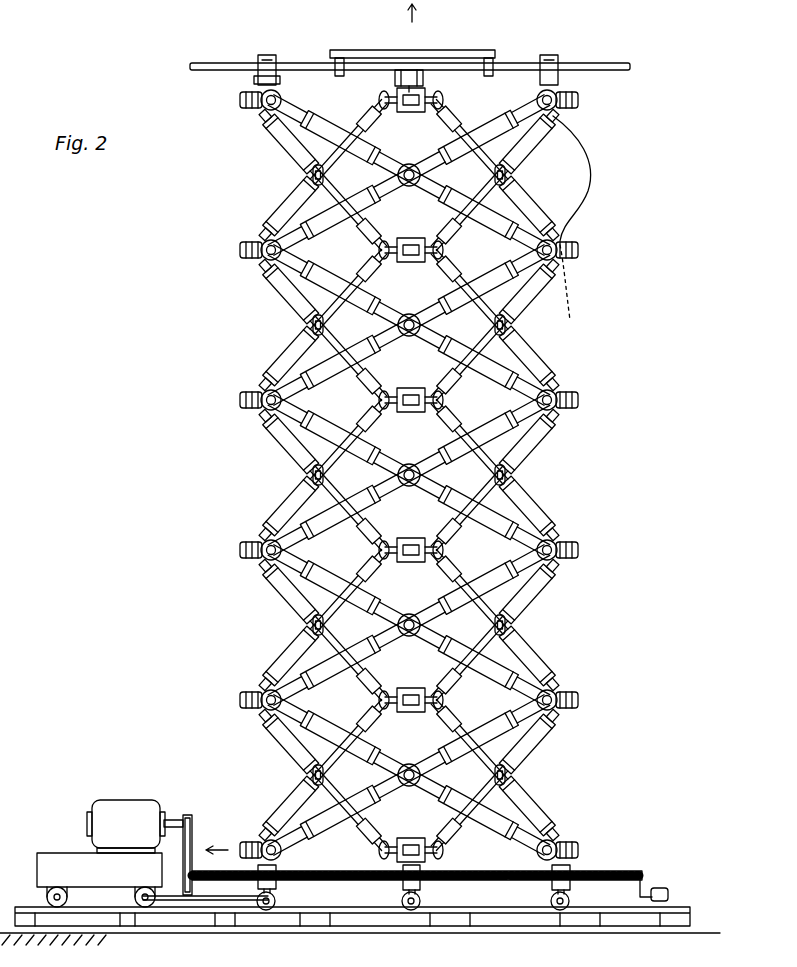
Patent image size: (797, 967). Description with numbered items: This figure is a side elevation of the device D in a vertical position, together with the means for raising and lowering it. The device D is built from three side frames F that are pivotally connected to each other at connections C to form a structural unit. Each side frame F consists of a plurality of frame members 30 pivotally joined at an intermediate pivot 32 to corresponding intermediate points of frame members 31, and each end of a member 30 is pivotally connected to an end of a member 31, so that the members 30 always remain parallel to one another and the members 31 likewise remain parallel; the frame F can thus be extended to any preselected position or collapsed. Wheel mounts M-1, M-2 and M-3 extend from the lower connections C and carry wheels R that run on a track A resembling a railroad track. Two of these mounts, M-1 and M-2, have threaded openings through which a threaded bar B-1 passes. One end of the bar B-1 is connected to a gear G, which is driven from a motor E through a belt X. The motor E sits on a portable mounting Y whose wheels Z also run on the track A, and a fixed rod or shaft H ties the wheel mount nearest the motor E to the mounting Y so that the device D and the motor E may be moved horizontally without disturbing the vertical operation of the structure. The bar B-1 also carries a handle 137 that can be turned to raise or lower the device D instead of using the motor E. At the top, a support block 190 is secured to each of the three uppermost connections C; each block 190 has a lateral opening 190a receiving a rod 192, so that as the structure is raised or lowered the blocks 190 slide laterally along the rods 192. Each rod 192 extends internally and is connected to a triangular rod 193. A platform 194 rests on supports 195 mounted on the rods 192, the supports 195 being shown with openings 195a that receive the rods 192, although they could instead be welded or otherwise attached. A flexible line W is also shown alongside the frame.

The rod 192 is at (240, 66).
The support block 190 is at (273, 56).
The opening 190a is at (252, 75).
The platform 194 is at (450, 50).
The support 195 is at (332, 74).
The opening 195a is at (490, 60).
The triangular rod 193 is at (456, 84).
The connection C is at (252, 108).
The flexible line W is at (578, 140).
The side frame F is at (543, 189).
The frame member 30 is at (374, 284).
The frame member 31 is at (451, 301).
The central pivot 32 is at (409, 316).
The device D is at (596, 402).
The motor E is at (132, 834).
The movable mounting Y is at (106, 882).
The belt X is at (202, 816).
The gear G is at (208, 850).
The wheel Z is at (66, 908).
The fixed rod or shaft H is at (185, 906).
The wheel R is at (264, 912).
The wheel mount M-1 is at (280, 892).
The wheel mount M-3 is at (422, 894).
The wheel mount M-2 is at (572, 895).
The threaded bar B-1 is at (644, 869).
The handle 137 is at (672, 882).
The track A is at (702, 906).